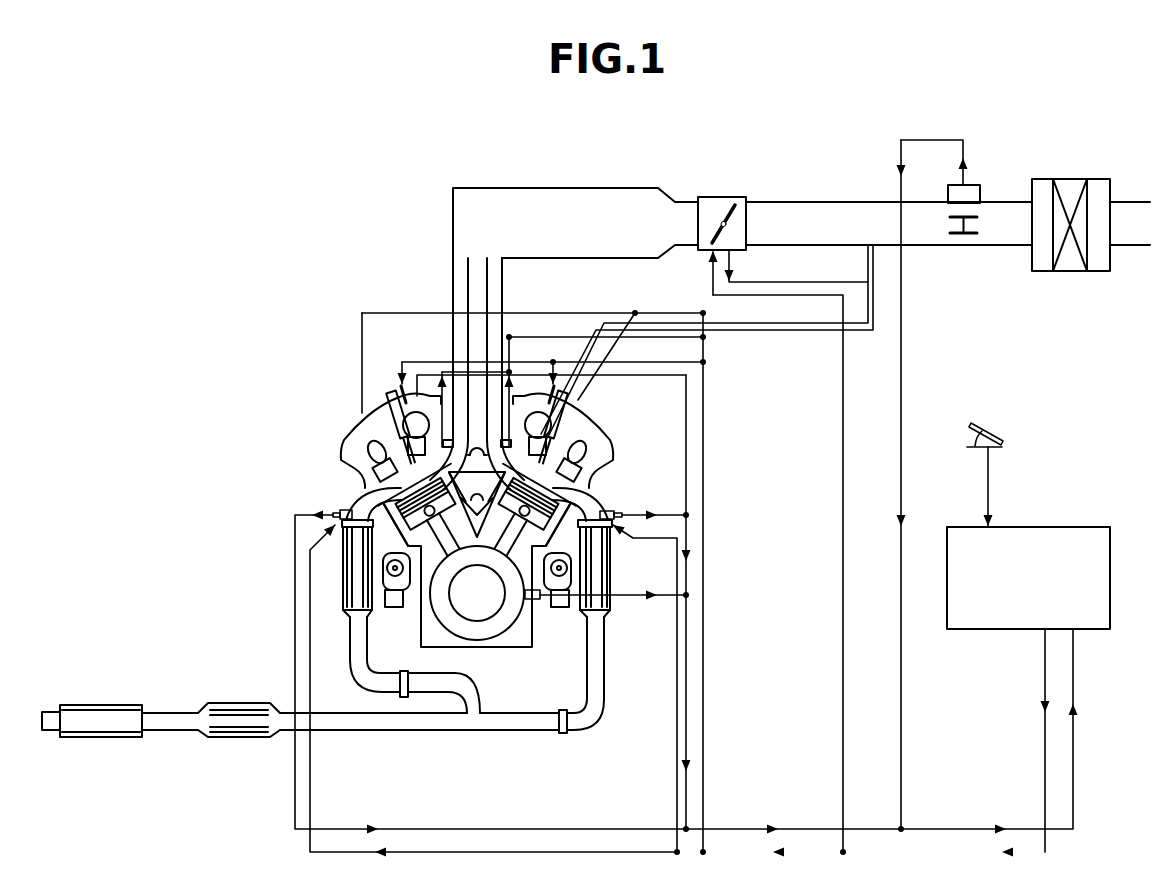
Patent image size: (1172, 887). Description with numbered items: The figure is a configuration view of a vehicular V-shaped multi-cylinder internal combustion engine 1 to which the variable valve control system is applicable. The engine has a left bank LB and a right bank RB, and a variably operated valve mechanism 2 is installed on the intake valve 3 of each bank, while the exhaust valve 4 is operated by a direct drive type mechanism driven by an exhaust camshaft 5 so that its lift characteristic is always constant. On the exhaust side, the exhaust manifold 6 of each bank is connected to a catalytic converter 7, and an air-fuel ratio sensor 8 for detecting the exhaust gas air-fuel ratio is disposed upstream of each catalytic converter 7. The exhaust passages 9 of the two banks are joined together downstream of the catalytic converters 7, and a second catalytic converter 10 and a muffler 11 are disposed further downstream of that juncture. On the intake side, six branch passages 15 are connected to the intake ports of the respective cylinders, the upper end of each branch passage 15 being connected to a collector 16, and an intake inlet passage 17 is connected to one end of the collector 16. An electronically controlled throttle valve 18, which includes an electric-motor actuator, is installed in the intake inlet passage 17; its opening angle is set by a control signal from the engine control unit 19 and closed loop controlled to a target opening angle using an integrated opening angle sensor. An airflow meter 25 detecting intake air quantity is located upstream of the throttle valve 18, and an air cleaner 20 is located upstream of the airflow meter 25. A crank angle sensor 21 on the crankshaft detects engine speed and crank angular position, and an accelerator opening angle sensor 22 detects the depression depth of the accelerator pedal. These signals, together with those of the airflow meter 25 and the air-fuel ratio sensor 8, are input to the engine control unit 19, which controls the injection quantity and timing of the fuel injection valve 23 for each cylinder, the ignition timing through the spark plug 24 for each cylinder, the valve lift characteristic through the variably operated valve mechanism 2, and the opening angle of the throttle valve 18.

The internal combustion engine 1 is at (313, 427).
The variably operated valve mechanism 2 is at (380, 413).
The left bank LB is at (323, 417).
The right bank RB is at (600, 418).
The intake valve 3 is at (395, 430).
The exhaust valve 4 is at (372, 477).
The exhaust camshaft 5 is at (368, 456).
The exhaust manifold 6 is at (598, 500).
The catalytic converter 7 is at (610, 570).
The air-fuel ratio sensor 8 is at (618, 512).
The exhaust passage 9 is at (377, 672).
The second catalytic converter 10 is at (248, 723).
The muffler 11 is at (118, 728).
The branch passage 15 is at (493, 357).
The collector 16 is at (558, 196).
The intake inlet passage 17 is at (682, 208).
The electronically controlled throttle valve 18 is at (722, 208).
The engine control unit 19 is at (1052, 527).
The air cleaner 20 is at (1073, 183).
The crank angle sensor 21 is at (533, 598).
The accelerator opening angle sensor 22 is at (972, 440).
The fuel injection valve 23 is at (588, 388).
The spark plug 24 is at (602, 423).
The airflow meter 25 is at (973, 190).